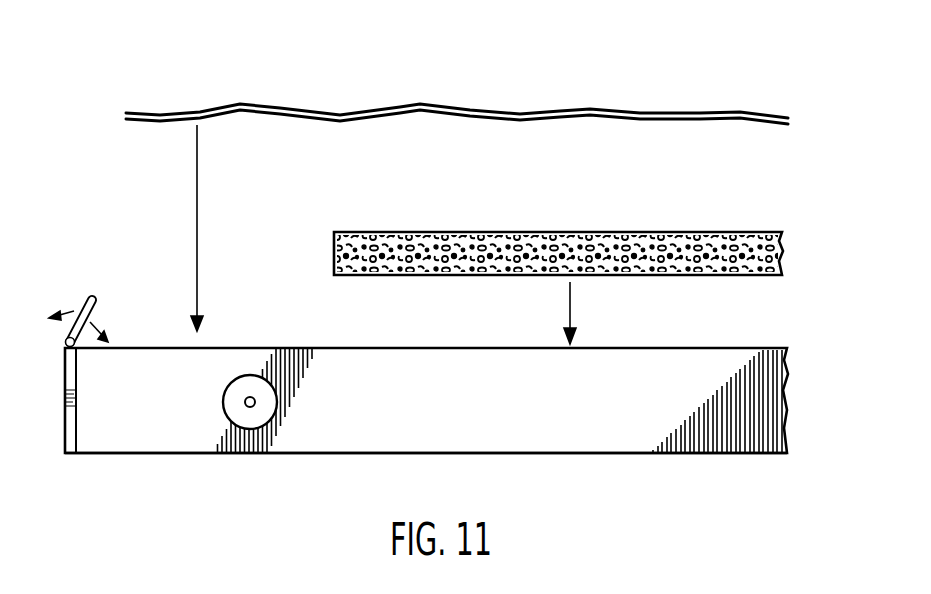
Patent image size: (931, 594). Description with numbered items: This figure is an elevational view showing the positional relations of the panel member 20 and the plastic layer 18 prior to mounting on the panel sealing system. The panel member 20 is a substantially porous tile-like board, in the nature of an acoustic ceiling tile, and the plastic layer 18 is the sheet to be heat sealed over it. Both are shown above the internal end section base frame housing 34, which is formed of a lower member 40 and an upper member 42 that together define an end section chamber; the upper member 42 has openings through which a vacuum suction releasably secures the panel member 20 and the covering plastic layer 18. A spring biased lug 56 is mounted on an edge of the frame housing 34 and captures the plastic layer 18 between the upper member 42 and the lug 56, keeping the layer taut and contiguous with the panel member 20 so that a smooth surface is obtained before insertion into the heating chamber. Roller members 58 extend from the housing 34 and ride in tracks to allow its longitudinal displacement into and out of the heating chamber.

The plastic layer 18 is at (563, 111).
The panel member 20 is at (707, 233).
The internal end section base frame housing 34 is at (449, 438).
The lower member 40 is at (594, 455).
The upper member 42 is at (739, 348).
The spring biased lug 56 is at (87, 299).
The roller member 58 is at (225, 398).